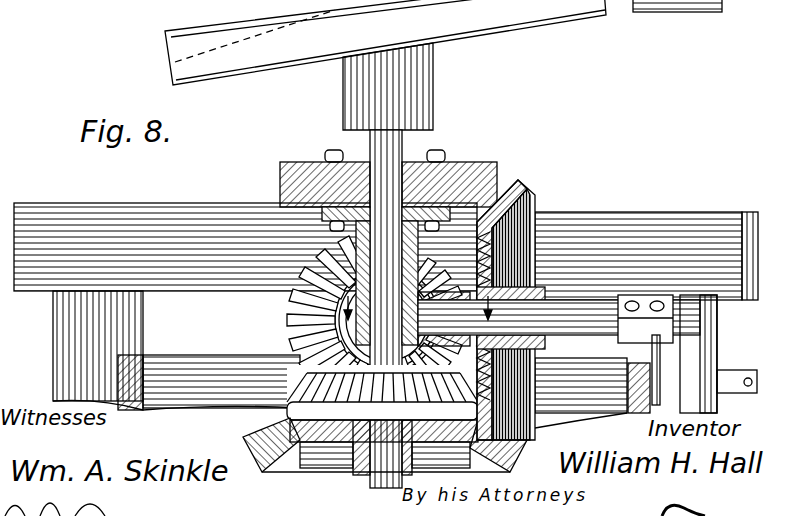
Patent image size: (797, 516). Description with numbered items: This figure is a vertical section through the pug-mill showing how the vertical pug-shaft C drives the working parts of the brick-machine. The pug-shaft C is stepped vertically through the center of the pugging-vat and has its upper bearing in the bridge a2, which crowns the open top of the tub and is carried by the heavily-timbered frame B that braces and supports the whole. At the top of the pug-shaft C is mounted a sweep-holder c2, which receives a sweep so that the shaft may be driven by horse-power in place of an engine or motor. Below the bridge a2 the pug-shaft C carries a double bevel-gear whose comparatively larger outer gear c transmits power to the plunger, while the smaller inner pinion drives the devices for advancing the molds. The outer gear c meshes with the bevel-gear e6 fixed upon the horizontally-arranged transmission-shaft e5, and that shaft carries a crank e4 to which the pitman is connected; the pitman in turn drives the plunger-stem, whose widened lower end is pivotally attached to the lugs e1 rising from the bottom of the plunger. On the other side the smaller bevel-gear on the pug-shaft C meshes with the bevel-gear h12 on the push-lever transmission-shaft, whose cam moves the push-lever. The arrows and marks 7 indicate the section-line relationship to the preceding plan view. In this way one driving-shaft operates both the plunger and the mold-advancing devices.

The sweep-holder c2 is at (385, 65).
The bridge a2 is at (388, 241).
The bevel-gear e6 is at (522, 308).
The bevel-gear h12 is at (365, 320).
The pin 7 is at (420, 312).
The transmission-shaft e5 is at (559, 319).
The crank e4 is at (692, 354).
The lugs e1 is at (310, 386).
The frame B is at (386, 315).
The outer bevel-gear c is at (385, 445).
The pug-shaft C is at (382, 309).